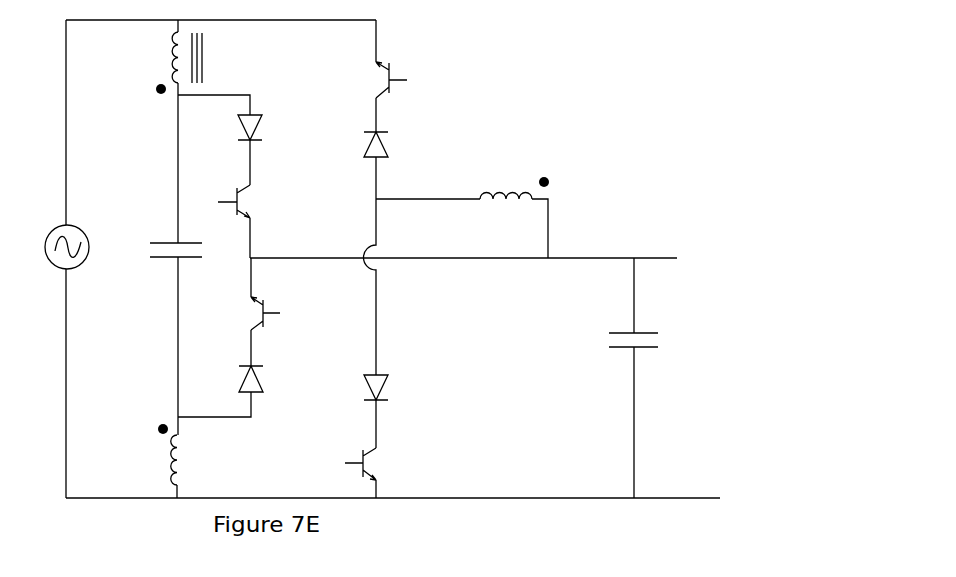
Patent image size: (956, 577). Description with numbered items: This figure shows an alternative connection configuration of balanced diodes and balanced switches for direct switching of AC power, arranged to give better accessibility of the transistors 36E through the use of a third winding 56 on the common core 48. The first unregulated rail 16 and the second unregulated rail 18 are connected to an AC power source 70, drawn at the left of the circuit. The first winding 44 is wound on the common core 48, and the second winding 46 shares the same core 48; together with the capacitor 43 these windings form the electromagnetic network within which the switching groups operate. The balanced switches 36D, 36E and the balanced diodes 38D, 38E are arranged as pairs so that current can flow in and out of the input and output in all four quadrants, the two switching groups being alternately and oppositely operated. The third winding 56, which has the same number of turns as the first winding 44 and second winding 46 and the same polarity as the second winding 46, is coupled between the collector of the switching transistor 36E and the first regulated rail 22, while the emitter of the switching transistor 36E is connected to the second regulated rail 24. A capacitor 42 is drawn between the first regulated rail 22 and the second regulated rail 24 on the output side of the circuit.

The first unregulated rail 16 is at (128, 20).
The second unregulated rail 18 is at (145, 497).
The first regulated rail 22 is at (663, 258).
The second regulated rail 24 is at (665, 497).
The balanced switch 36D is at (225, 202).
The switching transistor 36E is at (263, 310).
The balanced diode 38D is at (232, 119).
The balanced diode 38E is at (247, 375).
The capacitor 42 is at (632, 350).
The capacitor 43 is at (175, 242).
The first winding 44 is at (182, 57).
The second winding 46 is at (179, 448).
The common core 48 is at (203, 57).
The third winding 56 is at (500, 195).
The AC power source 70 is at (78, 258).